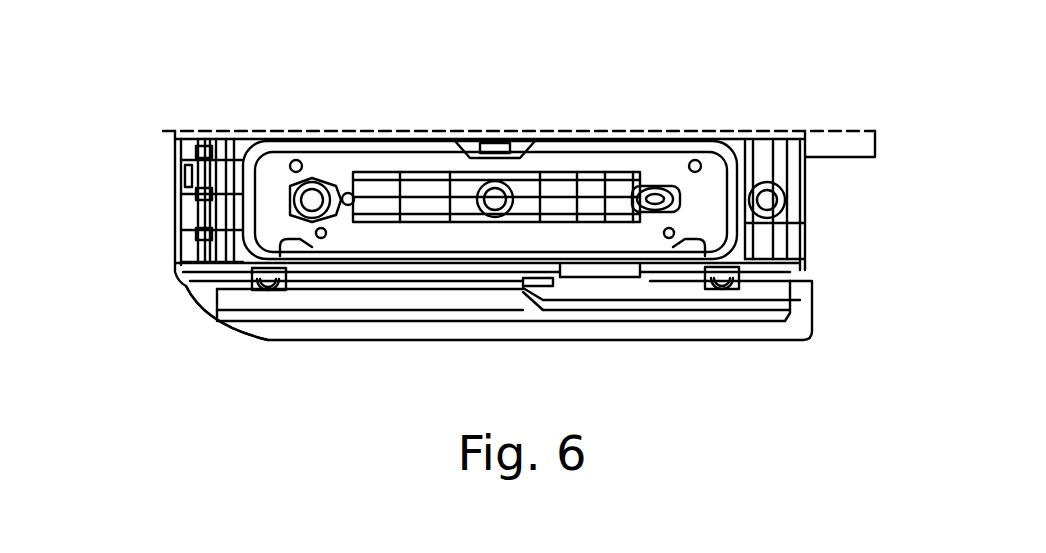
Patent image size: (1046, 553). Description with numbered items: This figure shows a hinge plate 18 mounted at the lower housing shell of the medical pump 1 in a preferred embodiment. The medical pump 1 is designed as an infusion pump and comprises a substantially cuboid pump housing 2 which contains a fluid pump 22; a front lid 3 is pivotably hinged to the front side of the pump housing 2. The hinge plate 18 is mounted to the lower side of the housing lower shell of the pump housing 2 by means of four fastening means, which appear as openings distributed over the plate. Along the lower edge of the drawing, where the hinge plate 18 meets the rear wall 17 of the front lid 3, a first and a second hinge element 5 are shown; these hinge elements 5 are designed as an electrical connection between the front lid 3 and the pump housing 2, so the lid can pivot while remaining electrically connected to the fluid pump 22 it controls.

The medical pump 1 is at (138, 116).
The pump housing 2 is at (676, 92).
The front lid 3 is at (443, 330).
The hinge element 5 is at (268, 286).
The rear wall 17 is at (523, 284).
The hinge plate 18 is at (436, 138).
The fluid pump 22 is at (296, 160).